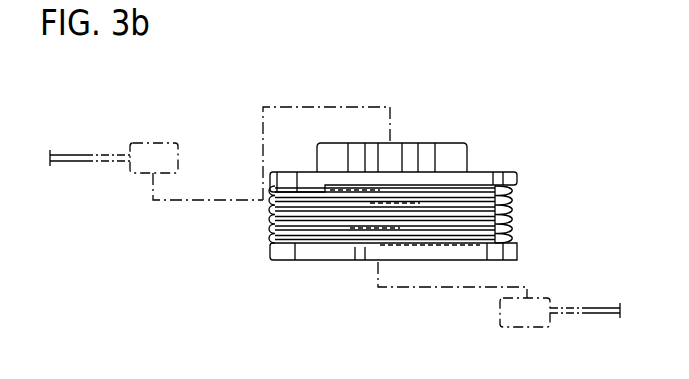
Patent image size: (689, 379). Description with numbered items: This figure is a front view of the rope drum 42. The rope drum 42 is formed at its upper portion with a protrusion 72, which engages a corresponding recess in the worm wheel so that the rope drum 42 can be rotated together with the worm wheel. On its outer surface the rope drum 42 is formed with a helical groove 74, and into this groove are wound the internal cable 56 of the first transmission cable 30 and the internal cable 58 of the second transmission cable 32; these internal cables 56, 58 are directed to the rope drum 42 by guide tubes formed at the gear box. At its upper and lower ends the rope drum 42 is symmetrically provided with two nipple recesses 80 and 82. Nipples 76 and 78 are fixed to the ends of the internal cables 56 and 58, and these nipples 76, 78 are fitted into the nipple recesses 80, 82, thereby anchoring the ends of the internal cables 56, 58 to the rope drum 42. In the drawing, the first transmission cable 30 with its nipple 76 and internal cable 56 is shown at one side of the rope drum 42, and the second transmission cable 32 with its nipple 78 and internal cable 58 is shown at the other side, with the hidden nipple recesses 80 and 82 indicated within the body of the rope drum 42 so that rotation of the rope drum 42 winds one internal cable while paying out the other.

The first transmission cable 30 is at (114, 144).
The second transmission cable 32 is at (569, 299).
The rope drum 42 is at (512, 171).
The internal cable 56 is at (82, 165).
The internal cable 58 is at (600, 318).
The protrusion 72 is at (322, 148).
The helical groove 74 is at (510, 208).
The nipple 76 is at (153, 147).
The nipple 78 is at (540, 298).
The nipple recess 80 is at (383, 178).
The nipple recess 82 is at (365, 268).